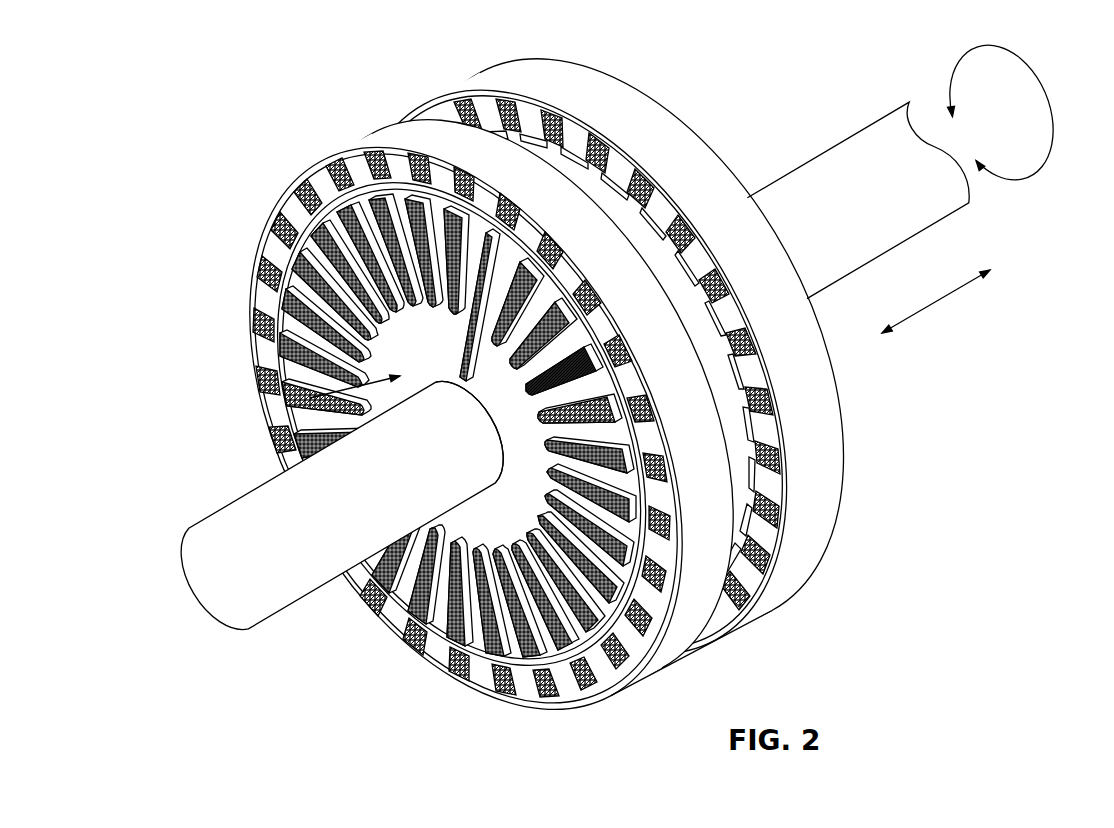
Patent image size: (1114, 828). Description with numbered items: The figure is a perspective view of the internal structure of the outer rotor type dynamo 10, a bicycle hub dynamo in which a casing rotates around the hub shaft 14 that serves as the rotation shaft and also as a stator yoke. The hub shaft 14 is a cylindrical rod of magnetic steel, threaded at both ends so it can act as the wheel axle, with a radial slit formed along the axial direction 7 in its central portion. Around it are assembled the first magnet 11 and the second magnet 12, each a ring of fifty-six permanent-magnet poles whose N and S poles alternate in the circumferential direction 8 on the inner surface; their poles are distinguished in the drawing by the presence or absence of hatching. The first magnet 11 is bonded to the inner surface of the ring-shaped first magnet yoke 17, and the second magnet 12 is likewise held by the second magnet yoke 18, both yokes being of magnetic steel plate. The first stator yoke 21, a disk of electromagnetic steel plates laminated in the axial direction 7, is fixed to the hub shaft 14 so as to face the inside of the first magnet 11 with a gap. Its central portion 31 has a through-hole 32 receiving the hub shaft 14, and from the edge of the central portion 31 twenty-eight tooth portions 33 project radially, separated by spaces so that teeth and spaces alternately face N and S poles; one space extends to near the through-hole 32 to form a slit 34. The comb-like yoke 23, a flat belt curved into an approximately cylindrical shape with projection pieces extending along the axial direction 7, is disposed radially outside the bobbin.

The axial direction 7 is at (938, 302).
The circumferential direction 8 is at (1046, 88).
The outer rotor type dynamo 10 is at (898, 567).
The first magnet 11 is at (252, 263).
The second magnet 12 is at (420, 103).
The hub shaft 14 is at (285, 588).
The first magnet yoke 17 is at (387, 140).
The second magnet yoke 18 is at (487, 77).
The first stator yoke 21 is at (300, 407).
The comb-like yoke 23 is at (582, 177).
The central portion 31 is at (418, 348).
The through-hole 32 is at (510, 447).
The tooth portions 33 is at (328, 320).
The slit 34 is at (480, 367).